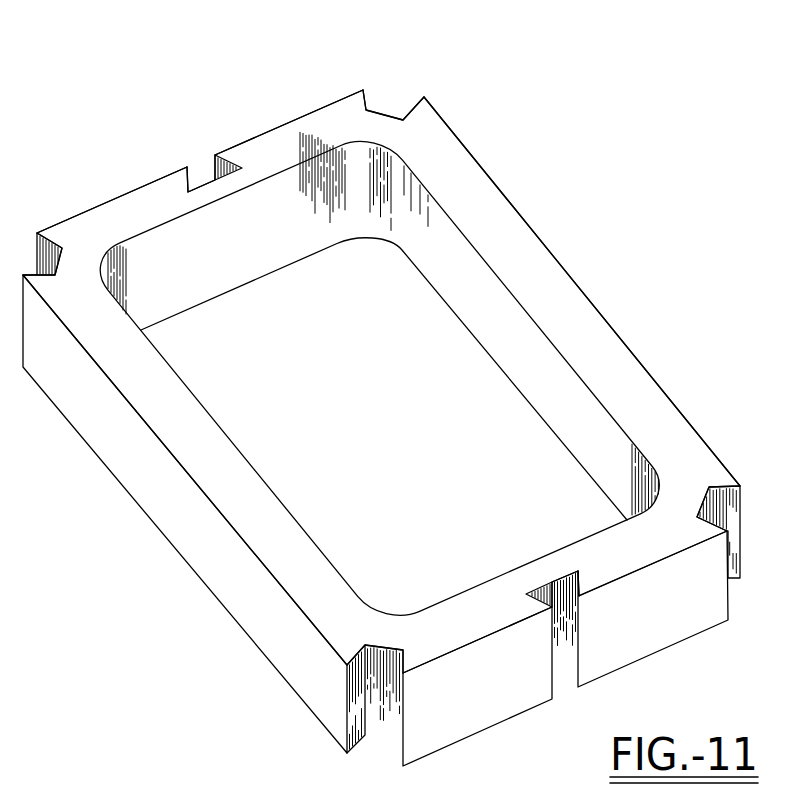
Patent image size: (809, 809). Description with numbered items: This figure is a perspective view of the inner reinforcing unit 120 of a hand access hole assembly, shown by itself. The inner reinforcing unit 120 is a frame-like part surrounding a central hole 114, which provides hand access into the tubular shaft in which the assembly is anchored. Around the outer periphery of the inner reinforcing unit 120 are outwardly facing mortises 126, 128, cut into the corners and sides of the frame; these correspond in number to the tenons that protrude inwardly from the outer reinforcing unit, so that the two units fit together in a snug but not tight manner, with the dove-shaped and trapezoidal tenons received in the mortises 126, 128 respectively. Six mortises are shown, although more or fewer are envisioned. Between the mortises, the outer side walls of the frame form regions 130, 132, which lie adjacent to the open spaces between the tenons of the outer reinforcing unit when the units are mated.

The inner reinforcing unit 120 is at (510, 188).
The hole 114 is at (481, 373).
The region 130 is at (635, 355).
The region 132 is at (297, 120).
The mortise 126 is at (393, 115).
The mortise 128 is at (208, 178).